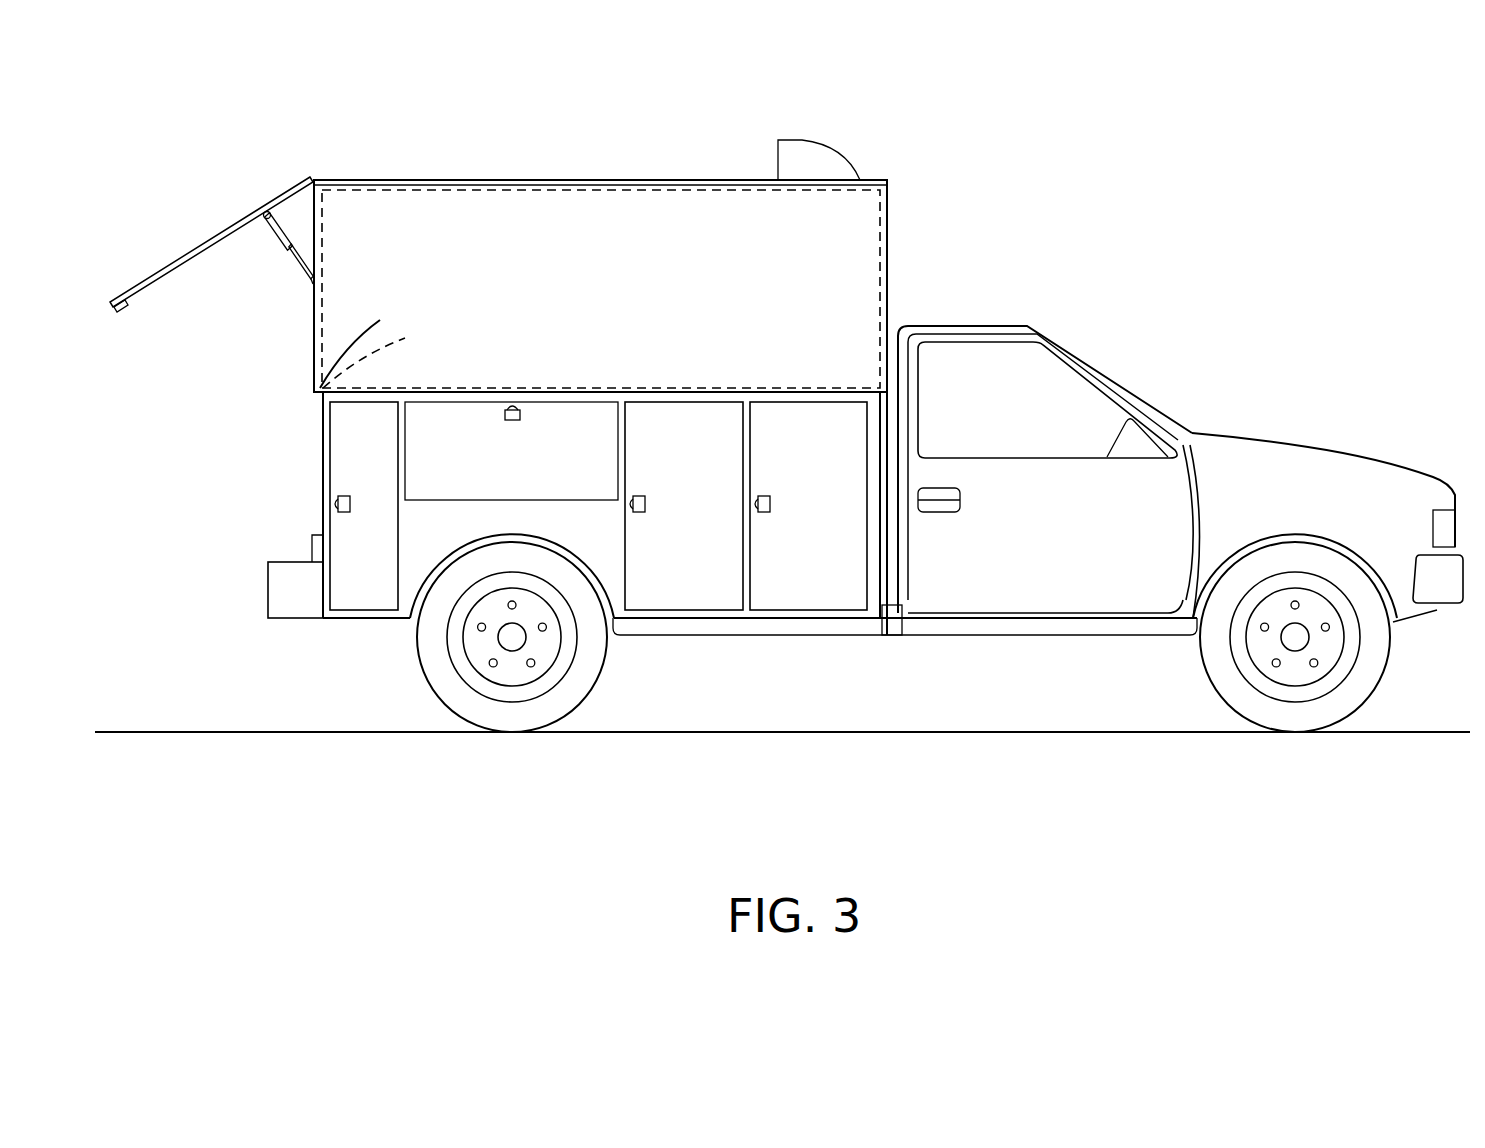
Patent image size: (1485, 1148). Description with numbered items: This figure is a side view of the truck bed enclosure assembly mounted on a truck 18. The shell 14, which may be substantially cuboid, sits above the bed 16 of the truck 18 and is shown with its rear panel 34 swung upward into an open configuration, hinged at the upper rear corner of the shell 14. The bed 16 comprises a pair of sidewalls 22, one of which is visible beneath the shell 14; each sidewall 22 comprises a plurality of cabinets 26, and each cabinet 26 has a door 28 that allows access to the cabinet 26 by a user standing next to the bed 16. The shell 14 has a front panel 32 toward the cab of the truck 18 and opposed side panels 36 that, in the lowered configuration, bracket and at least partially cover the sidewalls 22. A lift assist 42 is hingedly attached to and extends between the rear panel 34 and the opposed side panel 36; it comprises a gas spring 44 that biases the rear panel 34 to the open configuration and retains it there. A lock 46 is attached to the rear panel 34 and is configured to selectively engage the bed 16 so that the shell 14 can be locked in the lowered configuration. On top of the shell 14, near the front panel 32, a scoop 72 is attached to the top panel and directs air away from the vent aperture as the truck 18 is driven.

The shell 14 is at (620, 180).
The bed 16 is at (312, 552).
The truck 18 is at (1065, 337).
The sidewalls 22 is at (430, 522).
The cabinets 26 is at (577, 475).
The door 28 is at (845, 562).
The front panel 32 is at (887, 257).
The rear panel 34 is at (197, 250).
The opposed side panels 36 is at (320, 388).
The lift assist 42 is at (295, 240).
The gas spring 44 is at (272, 222).
The lock 46 is at (128, 308).
The scoop 72 is at (803, 148).